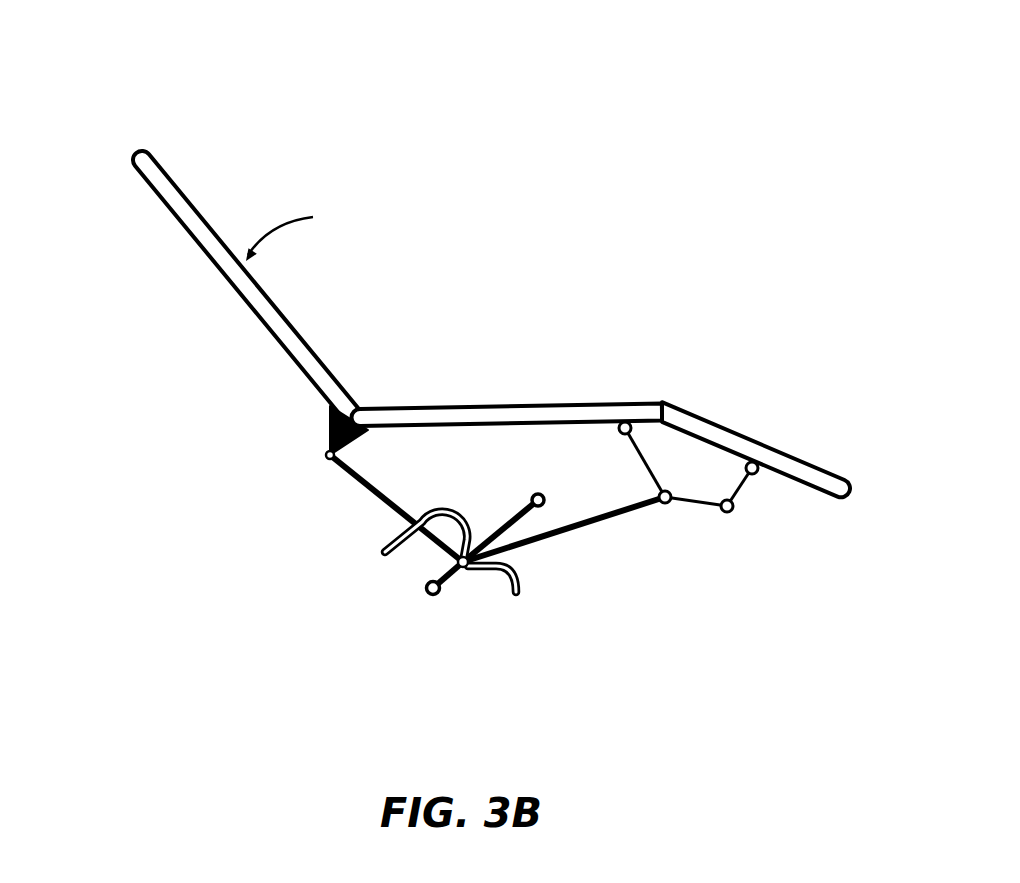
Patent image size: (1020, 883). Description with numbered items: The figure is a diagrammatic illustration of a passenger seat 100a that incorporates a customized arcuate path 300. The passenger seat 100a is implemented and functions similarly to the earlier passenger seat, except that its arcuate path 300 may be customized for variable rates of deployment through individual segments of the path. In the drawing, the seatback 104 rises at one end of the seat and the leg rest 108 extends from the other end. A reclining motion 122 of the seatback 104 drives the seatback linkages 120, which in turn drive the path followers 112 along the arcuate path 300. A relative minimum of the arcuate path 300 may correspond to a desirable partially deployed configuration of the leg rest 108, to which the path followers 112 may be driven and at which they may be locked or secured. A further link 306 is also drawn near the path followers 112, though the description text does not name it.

The seat assembly 100a is at (112, 80).
The backrest 104 is at (212, 308).
The leg rest 108 is at (718, 438).
The pivot 112 is at (465, 570).
The link 120 is at (388, 478).
The backrest rotation direction 122 is at (285, 220).
The cam bracket 300 is at (522, 573).
The link 306 is at (515, 518).